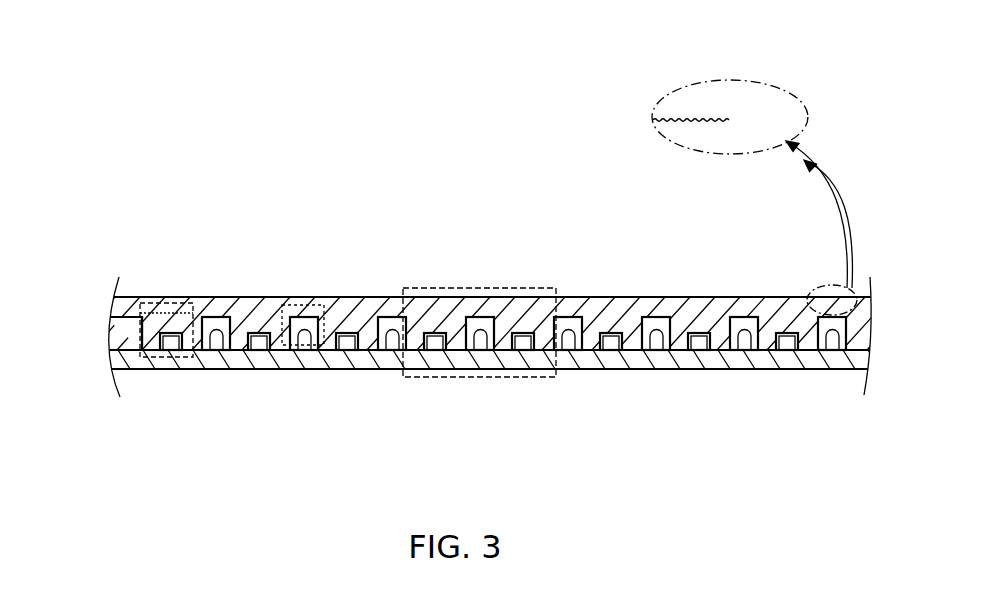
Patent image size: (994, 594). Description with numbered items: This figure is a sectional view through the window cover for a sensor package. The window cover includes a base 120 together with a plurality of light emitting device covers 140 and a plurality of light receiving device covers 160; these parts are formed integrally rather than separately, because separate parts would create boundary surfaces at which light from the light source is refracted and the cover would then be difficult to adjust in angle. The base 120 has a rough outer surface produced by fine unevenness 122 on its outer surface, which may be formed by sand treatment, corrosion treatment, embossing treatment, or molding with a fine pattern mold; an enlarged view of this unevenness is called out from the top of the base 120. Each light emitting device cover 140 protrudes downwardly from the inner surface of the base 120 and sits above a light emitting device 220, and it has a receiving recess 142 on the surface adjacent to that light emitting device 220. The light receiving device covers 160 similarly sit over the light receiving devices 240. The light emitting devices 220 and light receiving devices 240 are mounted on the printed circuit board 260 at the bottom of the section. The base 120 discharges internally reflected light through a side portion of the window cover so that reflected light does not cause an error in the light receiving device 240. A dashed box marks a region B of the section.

The base 120 is at (692, 303).
The fine unevenness 122 is at (660, 119).
The light emitting device cover 140 is at (167, 303).
The receiving recess 142 is at (142, 336).
The light receiving device cover 160 is at (292, 304).
The light emitting device 220 is at (612, 350).
The light receiving device 240 is at (657, 350).
The printed circuit board 260 is at (797, 369).
The enlarged region B is at (479, 378).